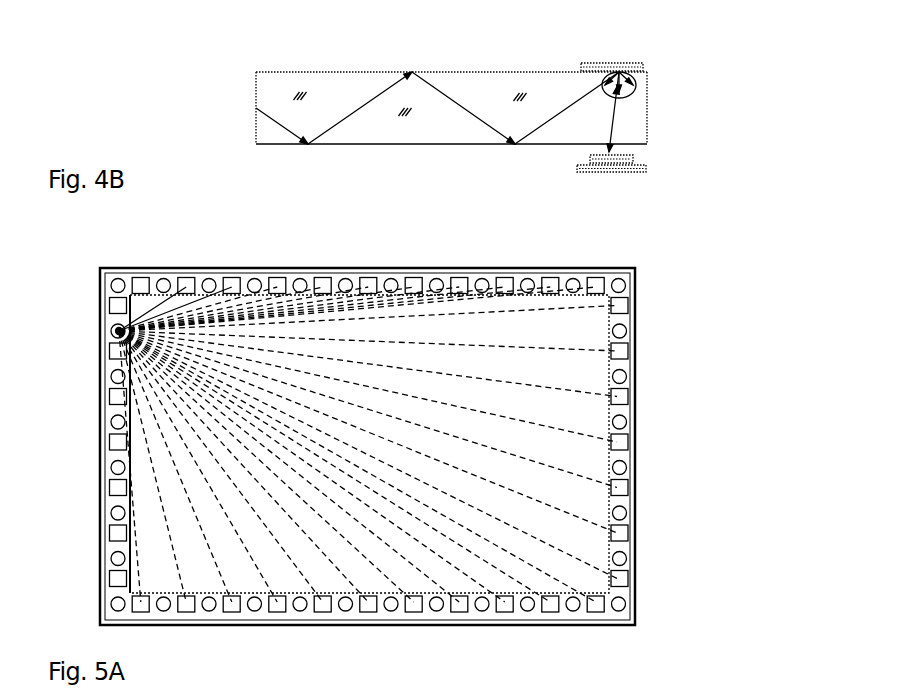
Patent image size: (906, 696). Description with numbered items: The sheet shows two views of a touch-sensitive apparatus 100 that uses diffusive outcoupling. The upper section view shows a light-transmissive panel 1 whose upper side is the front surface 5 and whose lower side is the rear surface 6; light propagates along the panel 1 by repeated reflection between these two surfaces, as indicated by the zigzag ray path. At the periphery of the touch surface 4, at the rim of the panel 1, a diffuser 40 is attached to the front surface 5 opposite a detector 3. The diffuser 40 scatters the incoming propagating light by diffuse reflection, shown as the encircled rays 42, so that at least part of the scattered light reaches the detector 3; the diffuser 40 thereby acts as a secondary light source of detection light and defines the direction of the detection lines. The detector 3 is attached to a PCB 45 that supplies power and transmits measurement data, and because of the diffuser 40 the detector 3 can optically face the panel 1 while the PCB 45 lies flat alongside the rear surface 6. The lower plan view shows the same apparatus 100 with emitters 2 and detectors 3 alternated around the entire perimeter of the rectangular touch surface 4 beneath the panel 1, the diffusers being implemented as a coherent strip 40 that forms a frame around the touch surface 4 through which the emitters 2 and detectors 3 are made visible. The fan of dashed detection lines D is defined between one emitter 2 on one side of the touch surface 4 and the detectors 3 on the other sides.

In FIG. 4B, the touch sensing device 100 is at (684, 77).
In FIG. 5A, the touch sensing device 100 is at (684, 282).
In FIG. 4B, the panel 1 is at (636, 108).
In FIG. 5A, the panel 1 is at (635, 510).
In FIG. 4B, the touch surface 4 is at (482, 67).
In FIG. 5A, the touch surface 4 is at (556, 331).
In FIG. 4B, the front surface 5 is at (432, 72).
In FIG. 4B, the rear surface 6 is at (478, 146).
In FIG. 4B, the encircled rays 42 is at (602, 96).
In FIG. 4B, the diffuser 40 is at (604, 70).
In FIG. 5A, the diffuser 40 is at (107, 369).
In FIG. 4B, the detector 3 is at (623, 158).
In FIG. 5A, the detector 3 is at (628, 483).
In FIG. 4B, the PCB 45 is at (613, 170).
In FIG. 5A, the emitter 2 is at (108, 330).
In FIG. 5A, the detection lines D is at (482, 560).